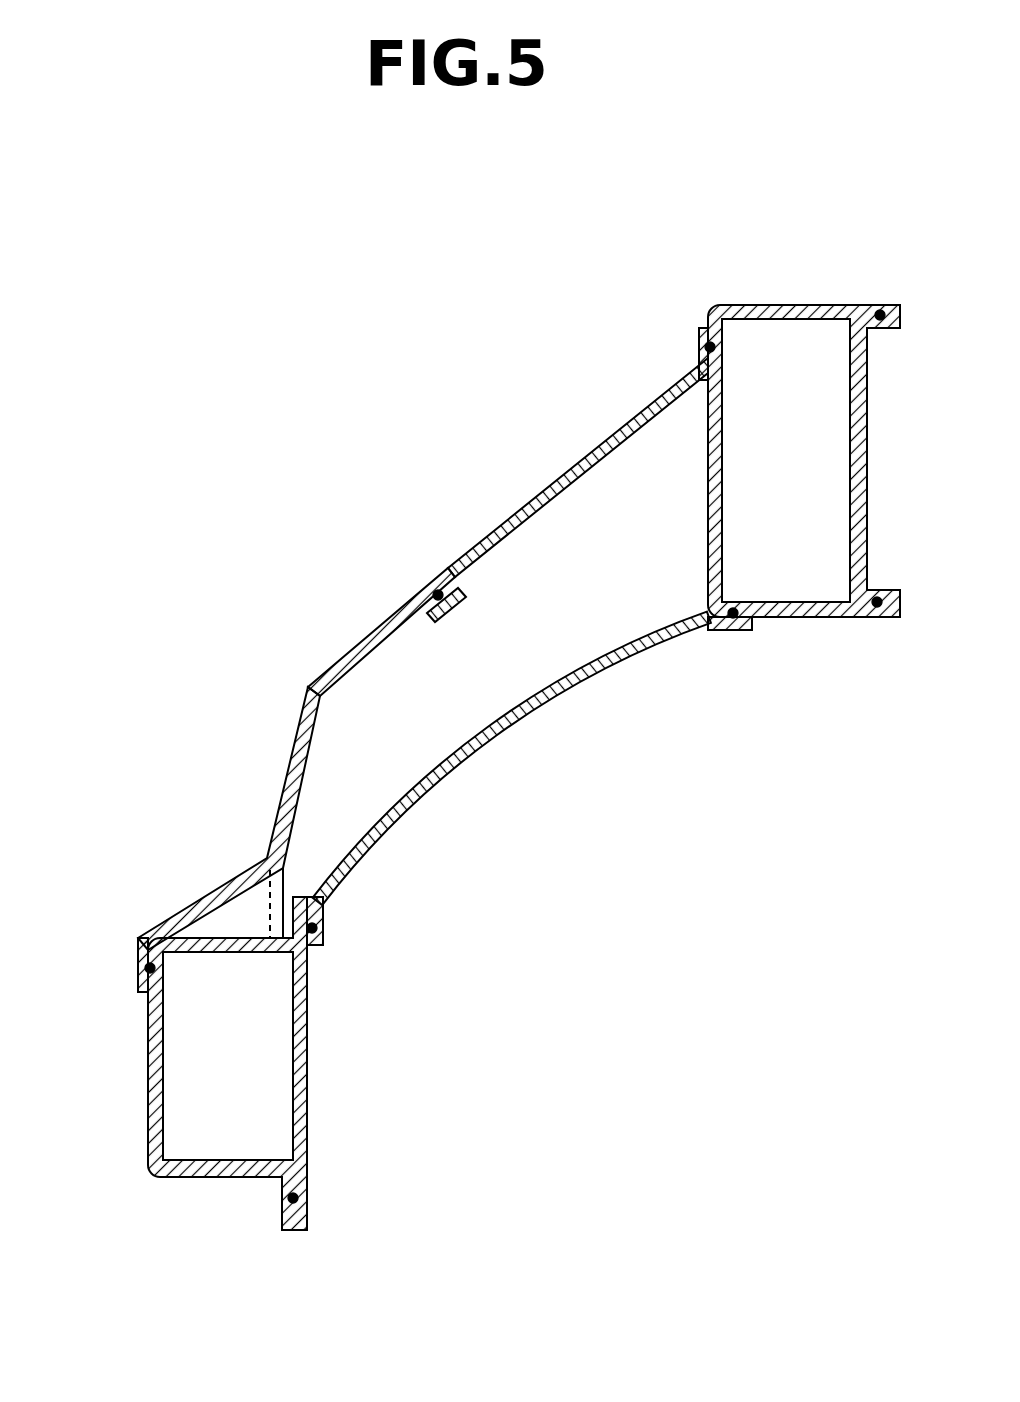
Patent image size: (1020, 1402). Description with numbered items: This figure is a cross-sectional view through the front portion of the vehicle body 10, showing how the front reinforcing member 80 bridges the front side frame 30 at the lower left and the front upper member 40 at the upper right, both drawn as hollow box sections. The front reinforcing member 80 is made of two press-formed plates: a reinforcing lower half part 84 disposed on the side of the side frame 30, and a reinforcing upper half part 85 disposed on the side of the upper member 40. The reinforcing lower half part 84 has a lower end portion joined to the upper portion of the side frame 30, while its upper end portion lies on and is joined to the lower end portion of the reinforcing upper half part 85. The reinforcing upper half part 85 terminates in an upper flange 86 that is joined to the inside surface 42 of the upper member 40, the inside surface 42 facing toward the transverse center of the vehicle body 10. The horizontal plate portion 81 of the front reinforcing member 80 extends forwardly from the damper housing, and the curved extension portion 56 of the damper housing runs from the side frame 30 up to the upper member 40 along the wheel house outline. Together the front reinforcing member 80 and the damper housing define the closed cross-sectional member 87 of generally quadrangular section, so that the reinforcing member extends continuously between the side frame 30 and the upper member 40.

The vehicle body 10 is at (167, 238).
The front side frame 30 is at (203, 1178).
The front upper member 40 is at (823, 303).
The inside surface 42 is at (707, 437).
The extension portion 56 is at (517, 713).
The front reinforcing member 80 is at (300, 437).
The horizontal plate portion 81 is at (522, 520).
The reinforcing lower half part 84 is at (343, 660).
The reinforcing upper half part 85 is at (480, 553).
The upper flange 86 is at (697, 353).
The closed cross-sectional member 87 is at (613, 525).